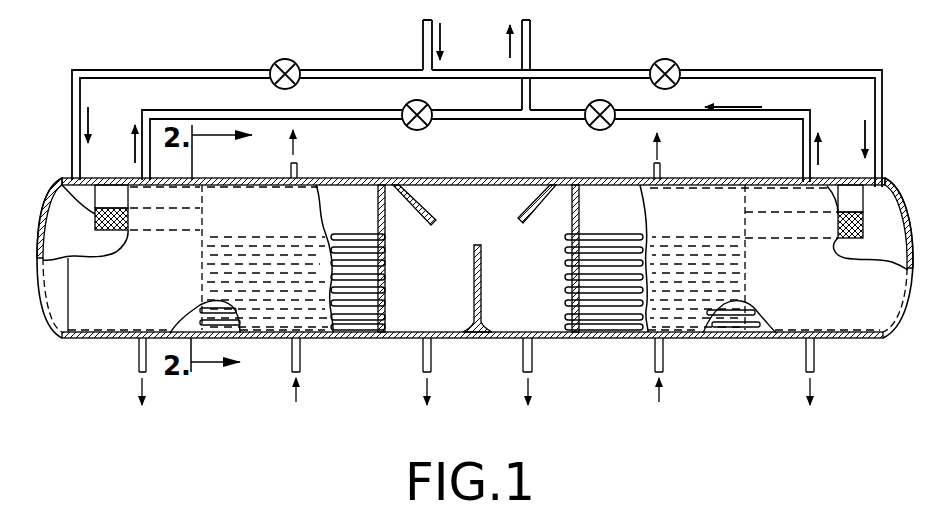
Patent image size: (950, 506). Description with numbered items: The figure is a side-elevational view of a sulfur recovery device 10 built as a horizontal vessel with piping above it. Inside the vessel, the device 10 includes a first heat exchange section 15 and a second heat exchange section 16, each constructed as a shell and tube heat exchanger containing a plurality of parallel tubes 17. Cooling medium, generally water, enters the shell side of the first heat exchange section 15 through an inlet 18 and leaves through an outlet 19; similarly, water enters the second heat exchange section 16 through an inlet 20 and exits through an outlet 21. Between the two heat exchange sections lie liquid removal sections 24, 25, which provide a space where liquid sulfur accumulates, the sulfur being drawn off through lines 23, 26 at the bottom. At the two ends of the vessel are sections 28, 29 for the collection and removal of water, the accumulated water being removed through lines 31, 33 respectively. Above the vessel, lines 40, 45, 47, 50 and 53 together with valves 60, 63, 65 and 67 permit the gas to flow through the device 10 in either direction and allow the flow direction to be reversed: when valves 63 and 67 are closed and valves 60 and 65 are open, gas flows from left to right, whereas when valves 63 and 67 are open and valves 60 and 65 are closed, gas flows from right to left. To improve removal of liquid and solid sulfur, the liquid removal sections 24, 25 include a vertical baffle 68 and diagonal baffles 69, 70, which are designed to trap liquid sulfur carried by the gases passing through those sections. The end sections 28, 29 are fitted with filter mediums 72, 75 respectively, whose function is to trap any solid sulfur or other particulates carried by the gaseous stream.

The sulfur recovery device 10 is at (885, 345).
The first heat exchange section 15 is at (262, 345).
The second heat exchange section 16 is at (617, 345).
The parallel tubes 17 is at (386, 255).
The inlet 18 is at (302, 350).
The outlet 19 is at (298, 166).
The inlet 20 is at (664, 356).
The outlet 21 is at (654, 168).
The line 23 is at (422, 350).
The liquid removal section 24 is at (384, 334).
The liquid removal section 25 is at (505, 303).
The line 26 is at (534, 350).
The water collection section 28 is at (101, 334).
The water collection section 29 is at (852, 312).
The line 31 is at (138, 350).
The line 33 is at (805, 356).
The line 40 is at (423, 55).
The line 45 is at (72, 98).
The line 47 is at (882, 99).
The line 50 is at (538, 110).
The line 53 is at (486, 120).
The valve 60 is at (279, 62).
The valve 63 is at (668, 62).
The valve 65 is at (598, 128).
The valve 67 is at (410, 129).
The vertical baffle 68 is at (474, 283).
The diagonal baffle 69 is at (419, 184).
The diagonal baffle 70 is at (525, 200).
The filter medium 72 is at (95, 220).
The filter medium 75 is at (866, 222).